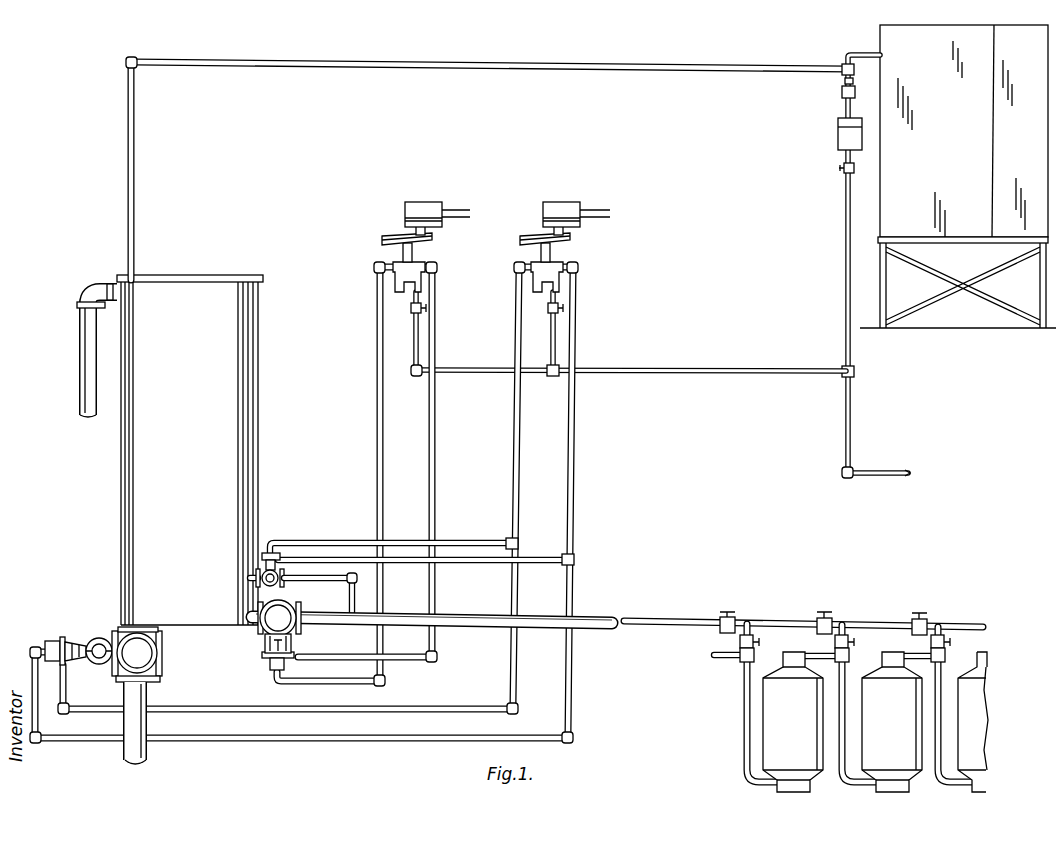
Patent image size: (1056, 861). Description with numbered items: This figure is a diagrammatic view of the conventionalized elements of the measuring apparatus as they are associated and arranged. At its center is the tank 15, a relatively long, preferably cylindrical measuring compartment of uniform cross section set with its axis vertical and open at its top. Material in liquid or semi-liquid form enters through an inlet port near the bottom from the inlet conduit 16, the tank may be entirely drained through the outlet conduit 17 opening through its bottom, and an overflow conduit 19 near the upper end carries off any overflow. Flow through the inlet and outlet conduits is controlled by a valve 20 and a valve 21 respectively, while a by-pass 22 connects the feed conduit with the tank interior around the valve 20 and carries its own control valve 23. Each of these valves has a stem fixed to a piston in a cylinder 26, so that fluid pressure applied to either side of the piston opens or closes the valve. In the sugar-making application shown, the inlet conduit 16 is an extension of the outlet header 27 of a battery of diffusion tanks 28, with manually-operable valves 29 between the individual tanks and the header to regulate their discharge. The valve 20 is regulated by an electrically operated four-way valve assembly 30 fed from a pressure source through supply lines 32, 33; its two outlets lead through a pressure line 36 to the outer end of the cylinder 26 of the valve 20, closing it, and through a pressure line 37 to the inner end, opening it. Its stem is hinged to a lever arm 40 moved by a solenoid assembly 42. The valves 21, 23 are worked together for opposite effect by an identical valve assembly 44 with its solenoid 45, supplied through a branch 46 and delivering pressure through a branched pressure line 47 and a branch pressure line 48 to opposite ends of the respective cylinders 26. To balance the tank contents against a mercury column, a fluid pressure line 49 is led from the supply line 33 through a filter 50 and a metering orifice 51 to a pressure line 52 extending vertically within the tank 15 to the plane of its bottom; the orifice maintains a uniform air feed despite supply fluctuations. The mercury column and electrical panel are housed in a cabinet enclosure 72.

The tank 15 is at (190, 450).
The inlet conduit 16 is at (467, 615).
The outlet conduit 17 is at (141, 753).
The overflow conduit 19 is at (84, 366).
The valve 20 is at (292, 626).
The valve 21 is at (148, 655).
The by-pass 22 is at (338, 582).
The control valve 23 is at (273, 586).
The cylinder 26 is at (266, 546).
The outlet header 27 is at (771, 621).
The diffusion tanks 28 is at (875, 722).
The manually-operable valves 29 is at (826, 620).
The four-way valve assembly 30 is at (422, 267).
The supply line 32 is at (481, 372).
The supply line 33 is at (878, 476).
The pressure line 36 is at (377, 396).
The pressure line 37 is at (436, 398).
The lever arm 40 is at (397, 238).
The solenoid assembly 42 is at (420, 204).
The valve assembly 44 is at (562, 267).
The solenoid 45 is at (558, 204).
The branch 46 is at (556, 345).
The branched pressure line 47 is at (513, 472).
The branch pressure line 48 is at (574, 527).
The fluid pressure line 49 is at (846, 264).
The filter 50 is at (838, 138).
The metering orifice 51 is at (841, 92).
The pressure line 52 is at (333, 68).
The cabinet enclosure 72 is at (958, 176).